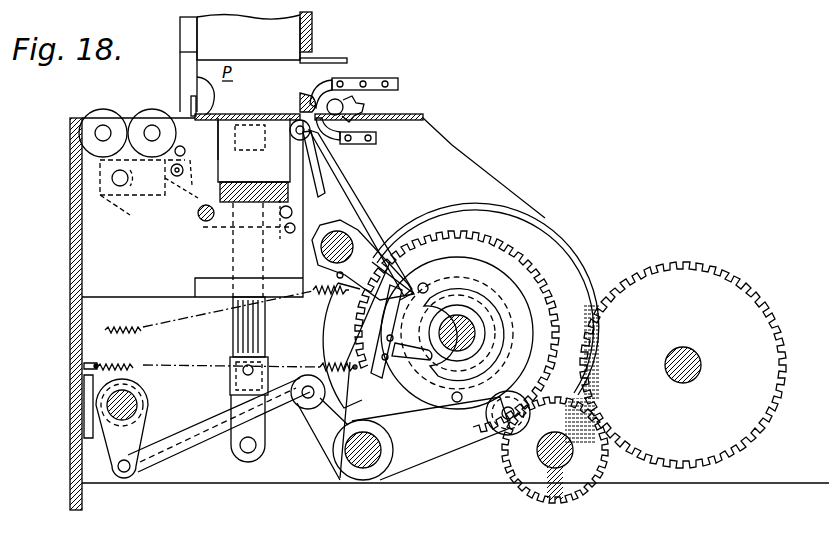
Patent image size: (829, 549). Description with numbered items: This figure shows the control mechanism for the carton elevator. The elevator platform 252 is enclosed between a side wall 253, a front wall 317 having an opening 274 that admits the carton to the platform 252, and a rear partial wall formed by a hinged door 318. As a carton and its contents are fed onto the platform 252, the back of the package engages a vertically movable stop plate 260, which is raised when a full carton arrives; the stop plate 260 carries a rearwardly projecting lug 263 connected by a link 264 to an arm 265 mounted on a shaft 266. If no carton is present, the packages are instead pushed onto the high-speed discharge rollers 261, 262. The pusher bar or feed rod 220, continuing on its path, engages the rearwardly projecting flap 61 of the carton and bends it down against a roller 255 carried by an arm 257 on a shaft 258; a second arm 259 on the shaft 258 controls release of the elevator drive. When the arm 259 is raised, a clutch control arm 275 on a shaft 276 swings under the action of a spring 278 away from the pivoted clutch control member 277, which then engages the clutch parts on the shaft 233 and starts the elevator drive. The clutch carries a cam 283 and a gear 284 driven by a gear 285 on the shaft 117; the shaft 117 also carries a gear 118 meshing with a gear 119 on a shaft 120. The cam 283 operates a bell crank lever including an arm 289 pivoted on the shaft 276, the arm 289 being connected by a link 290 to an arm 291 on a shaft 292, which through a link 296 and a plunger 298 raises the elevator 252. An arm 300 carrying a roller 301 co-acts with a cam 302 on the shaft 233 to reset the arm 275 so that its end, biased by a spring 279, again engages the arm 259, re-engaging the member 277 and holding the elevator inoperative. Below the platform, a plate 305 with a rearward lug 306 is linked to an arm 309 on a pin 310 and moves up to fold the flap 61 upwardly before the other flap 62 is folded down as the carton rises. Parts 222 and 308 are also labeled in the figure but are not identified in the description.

The hinged door 318 is at (180, 30).
The side wall 253 is at (240, 39).
The front wall 317 is at (312, 18).
The opening 274 is at (300, 55).
The flap 62 is at (331, 59).
The elevator platform 252 is at (200, 84).
The stop plate 260 is at (191, 102).
The feed rod 220 is at (305, 98).
The roller 255 is at (298, 119).
The flap 61 is at (310, 108).
The chain 222 is at (380, 78).
The discharge roller 261 is at (88, 118).
The discharge roller 262 is at (137, 120).
The shaft 266 is at (115, 180).
The arm 265 is at (134, 197).
The link 264 is at (205, 197).
The lug 263 is at (183, 180).
The lug 306 is at (282, 178).
The pin 310 is at (200, 221).
The arm 309 is at (217, 236).
The pin 308 is at (288, 232).
The plate 305 is at (308, 175).
The arm 257 is at (331, 198).
The shaft 258 is at (352, 242).
The arm 259 is at (372, 260).
The cam 283 is at (510, 223).
The gear 284 is at (520, 257).
The cam 302 is at (482, 258).
The shaft 233 is at (473, 323).
The gear 119 is at (695, 262).
The shaft 120 is at (699, 374).
The clutch control arm 275 is at (403, 315).
The spring 279 is at (347, 289).
The clutch control member 277 is at (403, 350).
The spring 278 is at (388, 376).
The plunger 298 is at (233, 340).
The link 296 is at (230, 384).
The shaft 292 is at (110, 407).
The arm 291 is at (115, 449).
The link 290 is at (163, 453).
The arm 289 is at (318, 427).
The shaft 276 is at (338, 481).
The arm 300 is at (430, 450).
The roller 301 is at (495, 425).
The gear 285 is at (522, 468).
The shaft 117 is at (560, 468).
The gear 118 is at (587, 473).